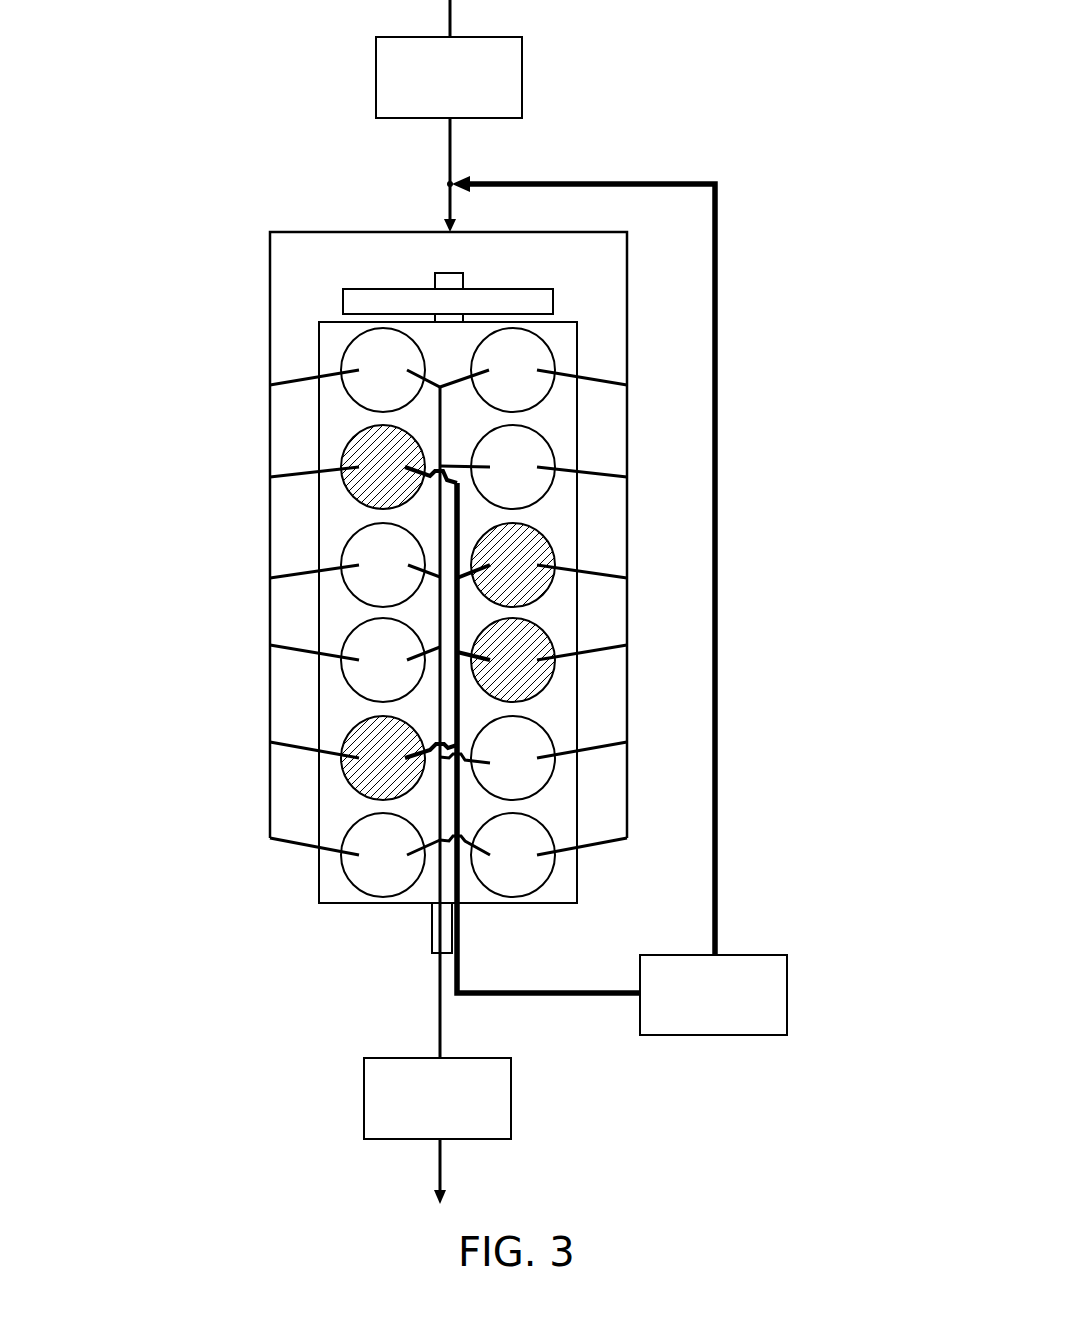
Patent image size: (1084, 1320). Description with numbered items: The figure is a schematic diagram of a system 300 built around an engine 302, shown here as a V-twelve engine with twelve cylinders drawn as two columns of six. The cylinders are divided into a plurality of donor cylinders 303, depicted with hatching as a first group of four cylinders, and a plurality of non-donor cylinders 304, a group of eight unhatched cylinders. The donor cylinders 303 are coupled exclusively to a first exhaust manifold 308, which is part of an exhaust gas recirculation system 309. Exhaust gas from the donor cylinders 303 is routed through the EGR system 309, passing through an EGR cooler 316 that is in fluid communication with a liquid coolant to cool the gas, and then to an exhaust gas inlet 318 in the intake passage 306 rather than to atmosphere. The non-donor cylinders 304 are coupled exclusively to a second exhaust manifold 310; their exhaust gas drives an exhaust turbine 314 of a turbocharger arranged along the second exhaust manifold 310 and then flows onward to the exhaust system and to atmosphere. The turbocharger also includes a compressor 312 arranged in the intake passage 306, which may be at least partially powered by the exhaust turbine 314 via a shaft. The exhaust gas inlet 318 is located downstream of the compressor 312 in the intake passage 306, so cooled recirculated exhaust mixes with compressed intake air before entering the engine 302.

The system 300 is at (505, 602).
The engine 302 is at (409, 594).
The donor cylinders 303 is at (345, 455).
The non-donor cylinders 304 is at (345, 363).
The intake passage 306 is at (447, 208).
The first exhaust manifold 308 is at (513, 996).
The exhaust gas recirculation (EGR) system 309 is at (740, 498).
The second exhaust manifold 310 is at (438, 1026).
The compressor 312 is at (449, 59).
The exhaust turbine 314 is at (437, 1131).
The EGR cooler 316 is at (713, 995).
The exhaust gas inlet 318 is at (453, 182).